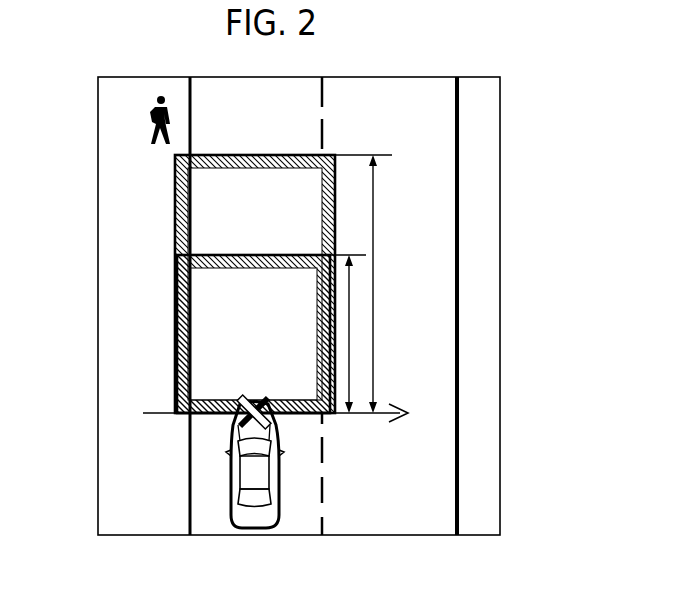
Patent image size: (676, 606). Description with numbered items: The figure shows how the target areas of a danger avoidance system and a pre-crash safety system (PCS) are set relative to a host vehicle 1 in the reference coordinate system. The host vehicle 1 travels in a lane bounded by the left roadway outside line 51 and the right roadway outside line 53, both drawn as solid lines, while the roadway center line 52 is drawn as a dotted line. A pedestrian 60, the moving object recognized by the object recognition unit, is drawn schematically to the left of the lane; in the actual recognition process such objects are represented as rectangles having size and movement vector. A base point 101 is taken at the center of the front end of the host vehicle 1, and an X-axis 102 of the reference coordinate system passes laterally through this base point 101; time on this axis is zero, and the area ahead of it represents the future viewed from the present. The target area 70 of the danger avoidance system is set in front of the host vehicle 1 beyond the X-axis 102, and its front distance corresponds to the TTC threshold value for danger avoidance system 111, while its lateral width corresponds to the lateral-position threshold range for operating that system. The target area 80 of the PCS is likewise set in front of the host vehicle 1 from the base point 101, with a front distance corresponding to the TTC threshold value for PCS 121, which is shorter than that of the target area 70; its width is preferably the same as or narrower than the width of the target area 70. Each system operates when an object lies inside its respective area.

The host vehicle 1 is at (230, 494).
The left roadway outside line 51 is at (189, 508).
The roadway center line 52 is at (322, 511).
The right roadway outside line 53 is at (457, 511).
The pedestrian 60 is at (151, 117).
The target area of the danger avoidance system 70 is at (263, 154).
The target area of the PCS 80 is at (222, 254).
The base point 101 is at (200, 414).
The X-axis 102 is at (370, 414).
The TTC threshold value for danger avoidance system 111 is at (374, 213).
The TTC threshold value for PCS 121 is at (350, 338).